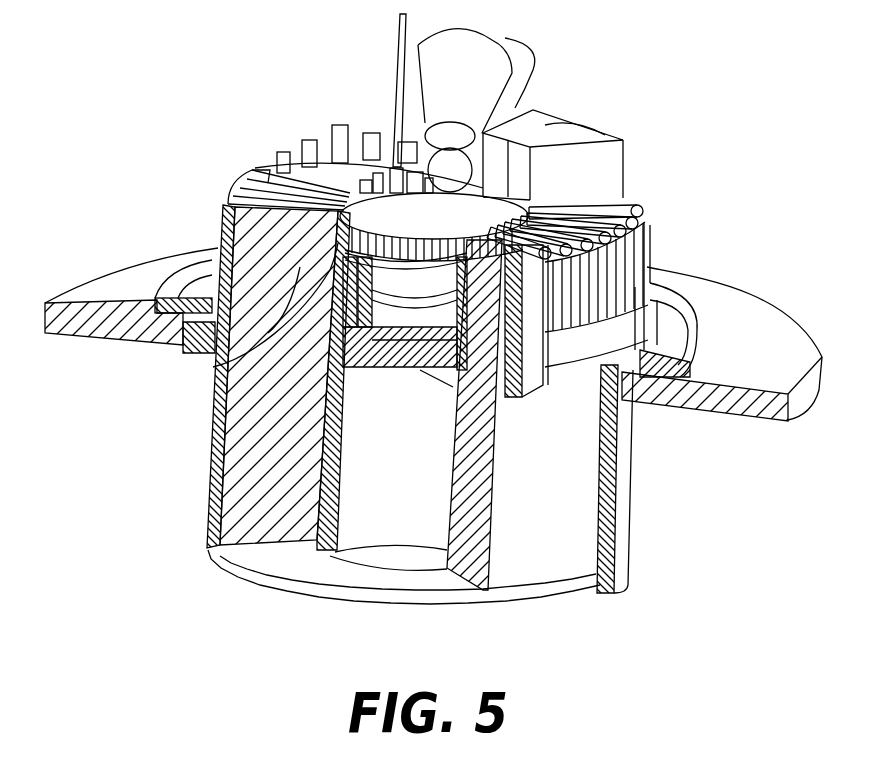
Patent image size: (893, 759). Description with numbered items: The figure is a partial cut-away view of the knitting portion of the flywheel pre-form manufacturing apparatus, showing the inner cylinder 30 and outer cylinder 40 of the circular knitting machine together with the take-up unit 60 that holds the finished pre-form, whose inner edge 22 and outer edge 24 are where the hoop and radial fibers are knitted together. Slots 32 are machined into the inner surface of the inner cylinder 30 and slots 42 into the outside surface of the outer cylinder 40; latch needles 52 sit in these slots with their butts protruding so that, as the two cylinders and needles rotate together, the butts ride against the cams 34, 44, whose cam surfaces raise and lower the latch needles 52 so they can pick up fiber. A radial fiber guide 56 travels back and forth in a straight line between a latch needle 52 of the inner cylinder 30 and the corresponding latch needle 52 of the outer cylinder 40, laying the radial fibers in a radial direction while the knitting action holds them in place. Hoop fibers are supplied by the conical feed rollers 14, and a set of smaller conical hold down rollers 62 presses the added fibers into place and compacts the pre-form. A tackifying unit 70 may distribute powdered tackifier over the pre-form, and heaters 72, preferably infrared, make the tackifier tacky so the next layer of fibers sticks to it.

The conical feed rollers 14 is at (484, 52).
The inner edge 22 is at (365, 532).
The outer edge 24 is at (573, 537).
The inner cylinder 30 is at (332, 498).
The slots 32 is at (230, 363).
The cams 34 is at (390, 298).
The outer cylinder 40 is at (610, 497).
The slots 42 is at (658, 278).
The cams 44 is at (77, 323).
The latch needles 52 is at (340, 128).
The radial fiber guide 56 is at (397, 82).
The take-up unit 60 is at (280, 583).
The hold down rollers 62 is at (265, 177).
The tackifying unit 70 is at (540, 115).
The heaters 72 is at (583, 133).